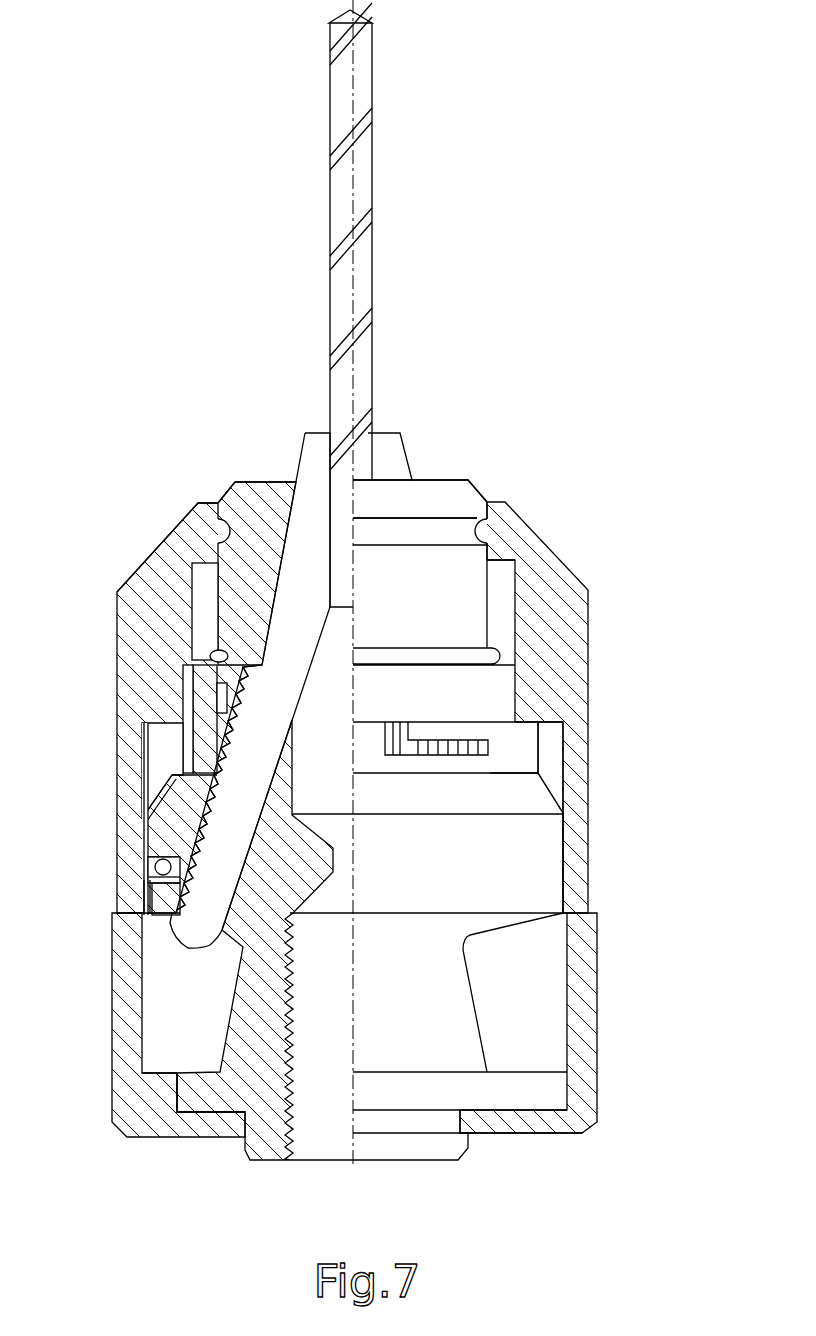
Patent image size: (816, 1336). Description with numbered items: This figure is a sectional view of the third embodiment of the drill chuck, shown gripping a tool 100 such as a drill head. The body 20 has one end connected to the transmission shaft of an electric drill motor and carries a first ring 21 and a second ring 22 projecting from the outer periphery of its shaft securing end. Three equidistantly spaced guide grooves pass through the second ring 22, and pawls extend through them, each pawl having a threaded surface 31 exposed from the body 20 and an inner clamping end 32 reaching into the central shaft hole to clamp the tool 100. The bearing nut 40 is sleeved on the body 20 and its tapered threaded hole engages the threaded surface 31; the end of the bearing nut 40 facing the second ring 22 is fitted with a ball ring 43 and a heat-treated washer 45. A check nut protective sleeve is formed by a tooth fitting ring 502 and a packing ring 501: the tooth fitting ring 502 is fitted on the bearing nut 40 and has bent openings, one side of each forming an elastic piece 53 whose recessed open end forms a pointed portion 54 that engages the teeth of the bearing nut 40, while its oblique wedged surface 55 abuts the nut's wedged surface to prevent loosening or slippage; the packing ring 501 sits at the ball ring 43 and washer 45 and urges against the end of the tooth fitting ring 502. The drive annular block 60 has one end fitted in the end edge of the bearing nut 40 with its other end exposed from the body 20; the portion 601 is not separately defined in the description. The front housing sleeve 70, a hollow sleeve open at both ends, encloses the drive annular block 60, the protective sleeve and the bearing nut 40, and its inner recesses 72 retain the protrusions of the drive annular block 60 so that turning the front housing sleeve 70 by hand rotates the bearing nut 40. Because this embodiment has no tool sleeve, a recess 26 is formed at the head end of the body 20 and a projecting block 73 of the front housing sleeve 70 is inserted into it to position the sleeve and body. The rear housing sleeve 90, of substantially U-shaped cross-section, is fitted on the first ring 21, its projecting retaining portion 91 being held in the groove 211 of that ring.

The drill bit 100 is at (363, 187).
The body 20 is at (240, 578).
The first ring 21 is at (217, 1100).
The groove 211 is at (187, 1100).
The second ring 22 is at (167, 907).
The recess 26 is at (247, 520).
The threaded surface 31 is at (205, 678).
The clamping end 32 is at (275, 603).
The bearing nut 40 is at (158, 822).
The ball ring 43 is at (147, 868).
The heat-treated washer 45 is at (147, 878).
The packing ring 501 is at (113, 908).
The tooth fitting ring 502 is at (143, 852).
The elastic piece 53 is at (167, 745).
The pointed portion 54 is at (410, 727).
The oblique wedged surface 55 is at (145, 787).
The drive annular block 60 is at (200, 648).
The sleeve inner rib 601 is at (183, 716).
The front housing sleeve 70 is at (197, 518).
The recesses 72 is at (182, 712).
The projecting block 73 is at (218, 532).
The rear housing sleeve 90 is at (112, 1042).
The projecting retaining portion 91 is at (160, 1097).